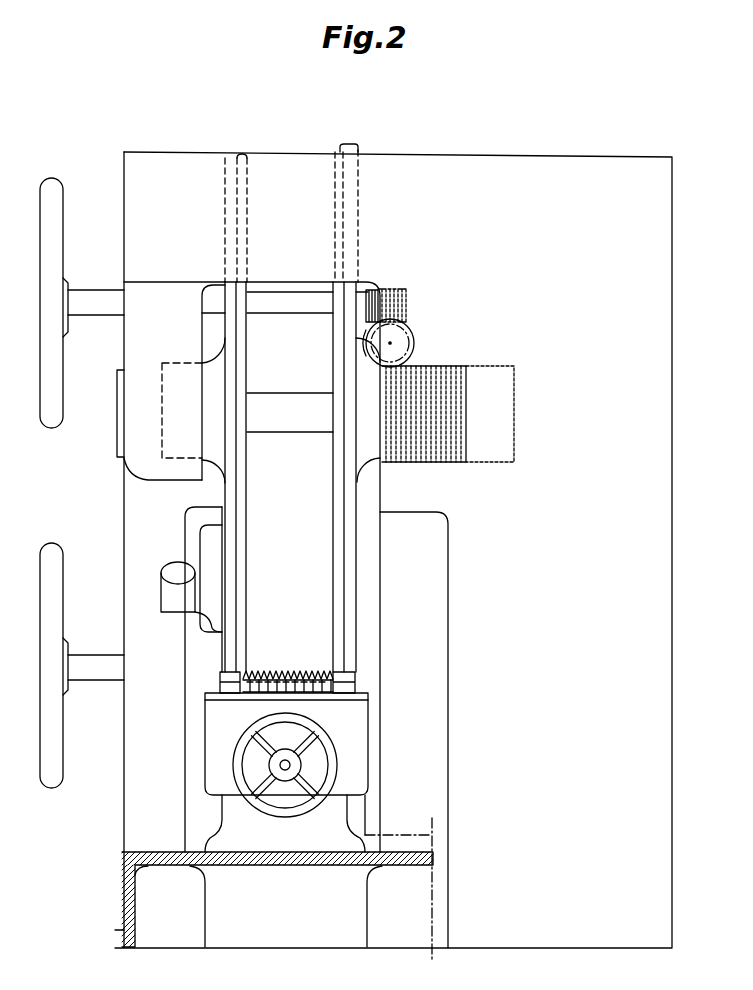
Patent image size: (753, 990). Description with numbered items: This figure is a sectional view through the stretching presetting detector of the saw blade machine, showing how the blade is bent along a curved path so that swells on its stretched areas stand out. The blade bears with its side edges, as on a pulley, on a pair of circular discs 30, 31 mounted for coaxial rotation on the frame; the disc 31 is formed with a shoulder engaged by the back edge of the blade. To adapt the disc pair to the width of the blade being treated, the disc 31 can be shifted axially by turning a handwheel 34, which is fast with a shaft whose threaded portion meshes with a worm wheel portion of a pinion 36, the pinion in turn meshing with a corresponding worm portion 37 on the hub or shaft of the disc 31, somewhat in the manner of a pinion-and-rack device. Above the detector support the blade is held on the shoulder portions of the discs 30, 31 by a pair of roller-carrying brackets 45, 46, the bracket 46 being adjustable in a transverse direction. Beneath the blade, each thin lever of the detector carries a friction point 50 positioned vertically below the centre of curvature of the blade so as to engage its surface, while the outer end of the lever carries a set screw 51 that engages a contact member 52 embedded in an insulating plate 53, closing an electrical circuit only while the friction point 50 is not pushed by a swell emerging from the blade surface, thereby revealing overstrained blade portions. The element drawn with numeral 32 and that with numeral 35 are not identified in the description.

The circular disc 30 is at (238, 514).
The circular disc 31 is at (336, 485).
The right guide rod 32 is at (346, 512).
The handwheel 34 is at (53, 273).
The clamp block 35 is at (401, 313).
The pinion 36 is at (410, 354).
The worm portion 37 is at (449, 433).
The roller-carrying bracket 45 is at (226, 677).
The roller-carrying bracket 46 is at (346, 685).
The friction point 50 is at (266, 682).
The set screw 51 is at (250, 690).
The contact member 52 is at (287, 690).
The insulating plate 53 is at (206, 696).